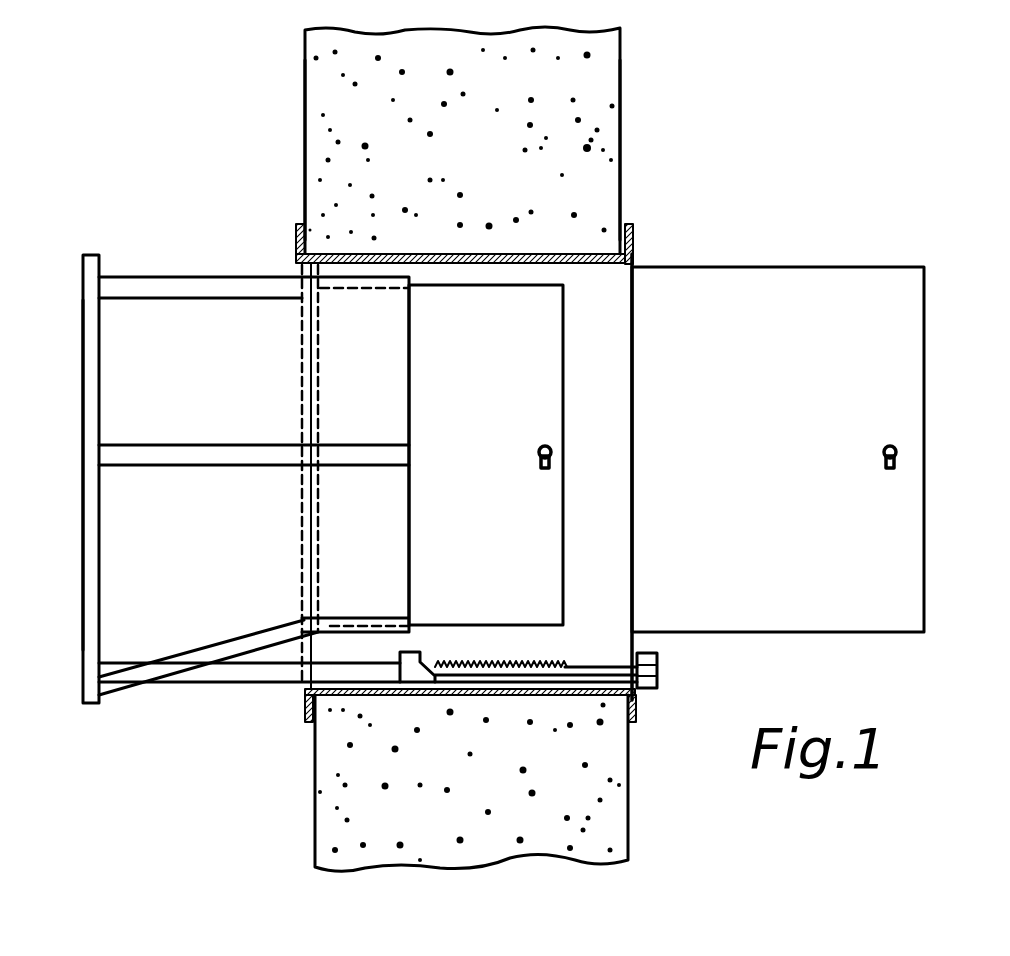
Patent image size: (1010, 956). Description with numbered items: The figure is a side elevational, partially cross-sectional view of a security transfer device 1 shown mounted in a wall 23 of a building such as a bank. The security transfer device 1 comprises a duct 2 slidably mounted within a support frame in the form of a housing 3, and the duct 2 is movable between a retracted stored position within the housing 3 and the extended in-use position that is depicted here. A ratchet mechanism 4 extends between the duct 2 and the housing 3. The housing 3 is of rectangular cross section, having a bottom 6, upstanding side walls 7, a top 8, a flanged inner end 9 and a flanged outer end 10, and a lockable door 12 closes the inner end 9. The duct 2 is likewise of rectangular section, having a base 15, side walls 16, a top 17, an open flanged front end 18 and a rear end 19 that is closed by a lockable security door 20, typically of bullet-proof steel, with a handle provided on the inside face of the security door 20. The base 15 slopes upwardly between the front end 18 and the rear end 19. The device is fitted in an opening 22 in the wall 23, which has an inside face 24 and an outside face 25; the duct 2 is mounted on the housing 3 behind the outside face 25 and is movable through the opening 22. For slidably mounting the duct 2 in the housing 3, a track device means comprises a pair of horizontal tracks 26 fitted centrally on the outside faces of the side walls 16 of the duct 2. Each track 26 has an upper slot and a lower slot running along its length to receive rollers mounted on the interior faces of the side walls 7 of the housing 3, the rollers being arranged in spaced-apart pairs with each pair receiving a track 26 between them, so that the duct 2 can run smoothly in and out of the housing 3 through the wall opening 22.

The security transfer device 1 is at (750, 219).
The duct 2 is at (207, 478).
The housing 3 is at (552, 252).
The ratchet mechanism 4 is at (510, 645).
The bottom 6 is at (545, 697).
The side walls 7 is at (600, 298).
The top 8 is at (420, 253).
The flanged inner end 9 is at (632, 232).
The flanged outer end 10 is at (292, 243).
The lockable door 12 is at (908, 316).
The base 15 is at (188, 663).
The side walls 16 is at (125, 580).
The top 17 is at (142, 278).
The open flanged front end 18 is at (85, 468).
The rear end 19 is at (398, 353).
The lockable security door 20 is at (512, 478).
The opening 22 is at (355, 700).
The wall 23 is at (605, 83).
The inside face 24 is at (620, 114).
The outside face 25 is at (306, 86).
The horizontal tracks 26 is at (188, 462).